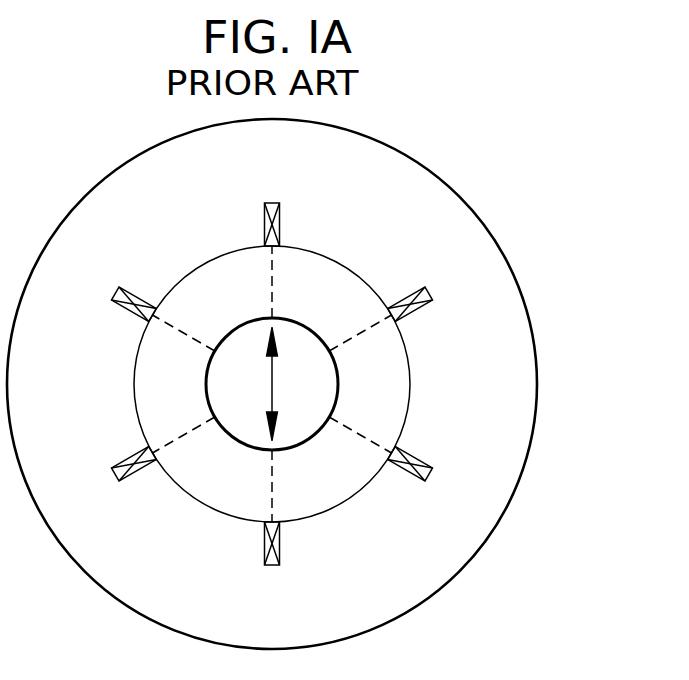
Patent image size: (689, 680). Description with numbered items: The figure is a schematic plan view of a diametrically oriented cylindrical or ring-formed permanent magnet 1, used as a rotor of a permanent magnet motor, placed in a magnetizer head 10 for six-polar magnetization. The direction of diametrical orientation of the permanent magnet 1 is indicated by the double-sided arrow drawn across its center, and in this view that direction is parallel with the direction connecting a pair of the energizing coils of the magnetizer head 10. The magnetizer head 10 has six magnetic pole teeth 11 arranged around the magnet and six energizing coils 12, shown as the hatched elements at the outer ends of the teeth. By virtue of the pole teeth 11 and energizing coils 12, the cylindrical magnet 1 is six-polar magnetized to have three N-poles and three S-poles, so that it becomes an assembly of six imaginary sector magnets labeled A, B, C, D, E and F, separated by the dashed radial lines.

The diametrically oriented cylindrical permanent magnet 1 is at (370, 296).
The magnetizer head 10 is at (548, 329).
The magnetic pole teeth 11 is at (430, 423).
The energizing coils 12 is at (430, 473).